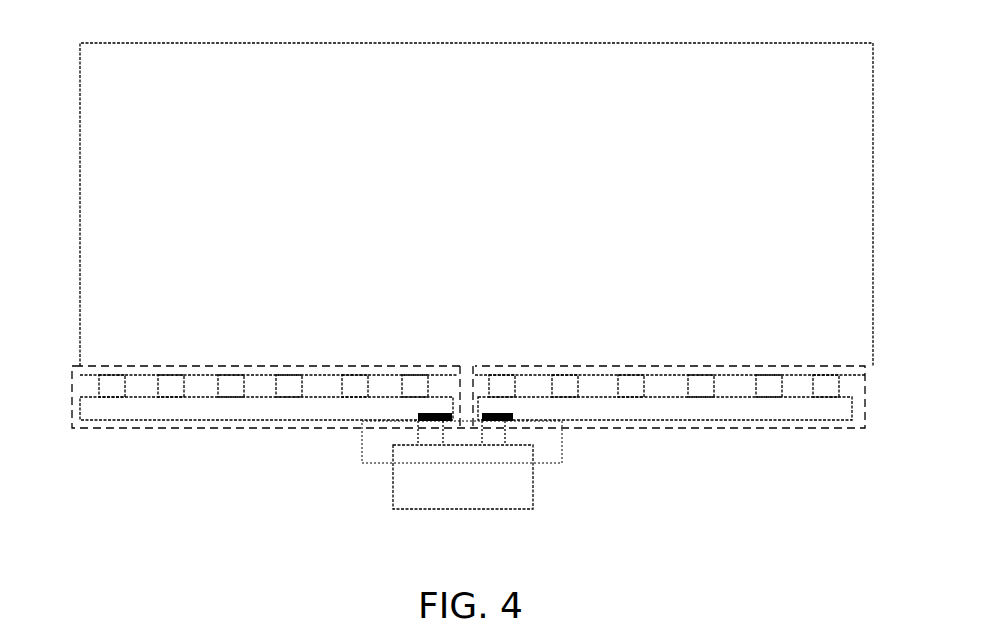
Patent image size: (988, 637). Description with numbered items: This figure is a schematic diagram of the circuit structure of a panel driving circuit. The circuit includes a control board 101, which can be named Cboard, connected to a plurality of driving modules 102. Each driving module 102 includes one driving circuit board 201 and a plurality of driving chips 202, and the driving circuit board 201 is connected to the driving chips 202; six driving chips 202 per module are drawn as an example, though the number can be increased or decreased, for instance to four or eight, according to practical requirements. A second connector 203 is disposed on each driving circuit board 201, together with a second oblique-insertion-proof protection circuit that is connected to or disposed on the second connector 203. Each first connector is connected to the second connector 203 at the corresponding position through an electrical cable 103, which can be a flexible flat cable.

The control board 101 is at (470, 490).
The driving module 102 is at (137, 430).
The electrical cable 103 is at (430, 437).
The driving circuit board 201 is at (247, 412).
The driving chips 202 is at (110, 392).
The second connector 203 is at (497, 422).